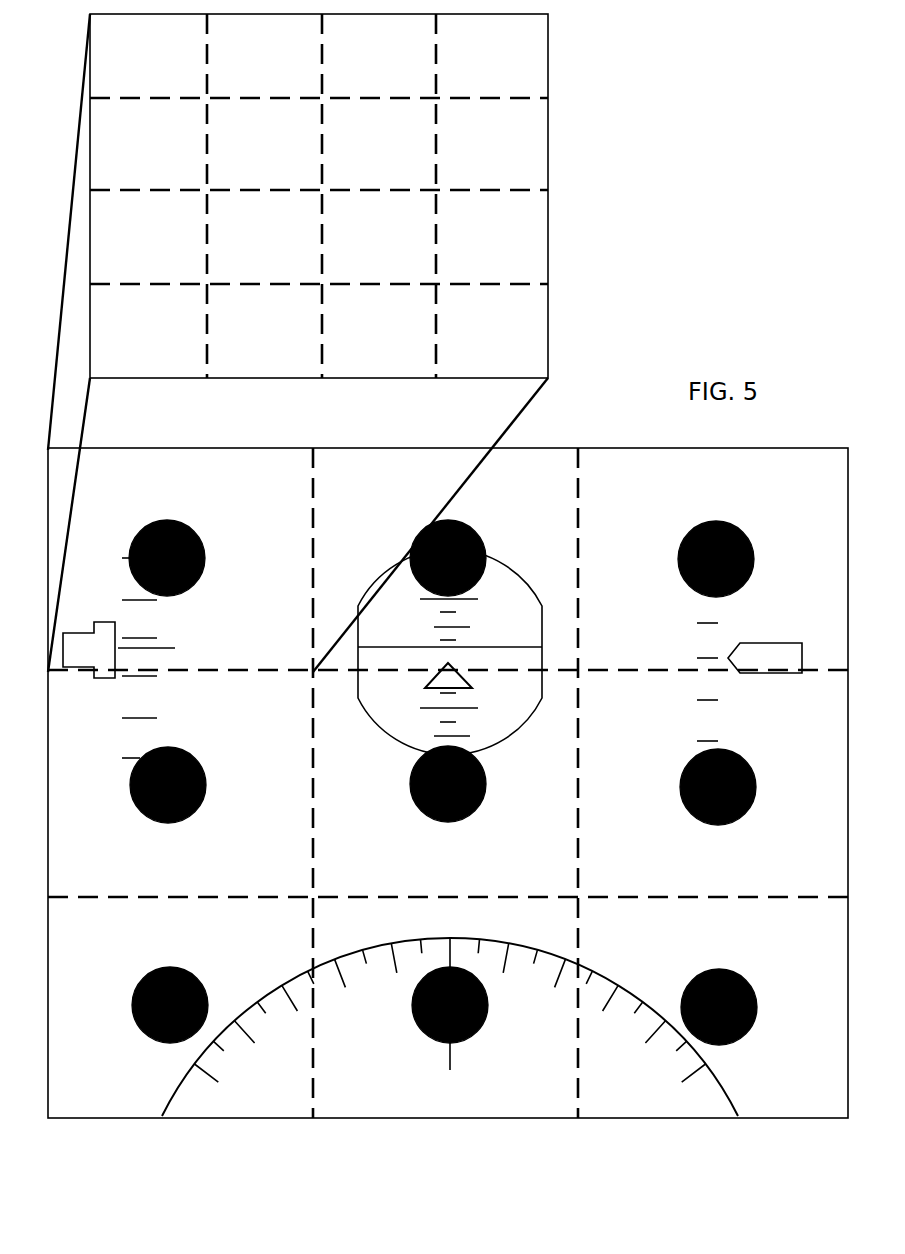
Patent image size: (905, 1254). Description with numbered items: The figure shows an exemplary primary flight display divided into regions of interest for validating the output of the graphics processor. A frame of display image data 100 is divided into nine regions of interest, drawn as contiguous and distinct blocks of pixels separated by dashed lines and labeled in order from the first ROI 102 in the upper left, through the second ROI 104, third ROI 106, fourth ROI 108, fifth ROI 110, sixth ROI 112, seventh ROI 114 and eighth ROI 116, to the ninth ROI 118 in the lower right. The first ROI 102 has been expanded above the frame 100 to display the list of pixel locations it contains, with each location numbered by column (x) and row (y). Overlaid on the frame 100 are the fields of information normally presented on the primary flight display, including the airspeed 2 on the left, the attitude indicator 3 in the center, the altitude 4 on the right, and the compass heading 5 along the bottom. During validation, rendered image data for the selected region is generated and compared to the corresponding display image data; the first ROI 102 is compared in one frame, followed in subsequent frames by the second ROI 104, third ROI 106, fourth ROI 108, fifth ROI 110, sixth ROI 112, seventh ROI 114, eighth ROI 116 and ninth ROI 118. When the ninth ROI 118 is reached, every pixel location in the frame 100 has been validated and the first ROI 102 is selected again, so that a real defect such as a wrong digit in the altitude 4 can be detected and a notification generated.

The frame of image data 100 is at (162, 446).
The first ROI 102 is at (62, 80).
The ROI 2 104 is at (380, 463).
The ROI 3 106 is at (609, 465).
The ROI 4 108 is at (237, 748).
The ROI 5 110 is at (507, 822).
The ROI 6 112 is at (612, 750).
The ROI 7 114 is at (115, 1058).
The ROI 8 116 is at (385, 1058).
The ROI 9 118 is at (800, 1060).
The airspeed 2 is at (108, 621).
The attitude indicator 3 is at (505, 558).
The altitude 4 is at (680, 619).
The compass heading 5 is at (497, 939).